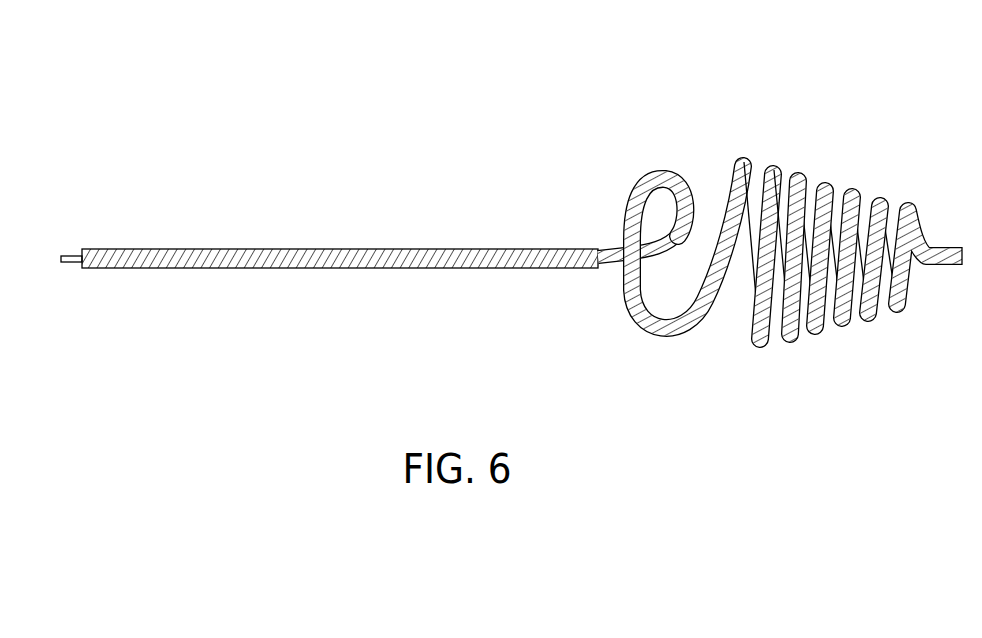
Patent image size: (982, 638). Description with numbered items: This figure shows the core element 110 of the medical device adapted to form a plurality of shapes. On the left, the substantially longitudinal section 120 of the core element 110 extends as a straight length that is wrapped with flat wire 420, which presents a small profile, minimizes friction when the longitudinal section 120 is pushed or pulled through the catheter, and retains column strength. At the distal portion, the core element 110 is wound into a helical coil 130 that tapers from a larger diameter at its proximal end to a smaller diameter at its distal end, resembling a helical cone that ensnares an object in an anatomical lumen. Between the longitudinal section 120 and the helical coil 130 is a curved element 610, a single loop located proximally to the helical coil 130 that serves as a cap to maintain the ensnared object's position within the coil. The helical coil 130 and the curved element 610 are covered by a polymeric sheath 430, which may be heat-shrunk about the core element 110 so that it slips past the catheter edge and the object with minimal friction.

The core element 110 is at (73, 255).
The flat wire 420 is at (328, 248).
The longitudinal section 120 is at (82, 302).
The helical coil 130 is at (838, 158).
The curved element 610 is at (698, 96).
The polymer sheath 430 is at (692, 338).